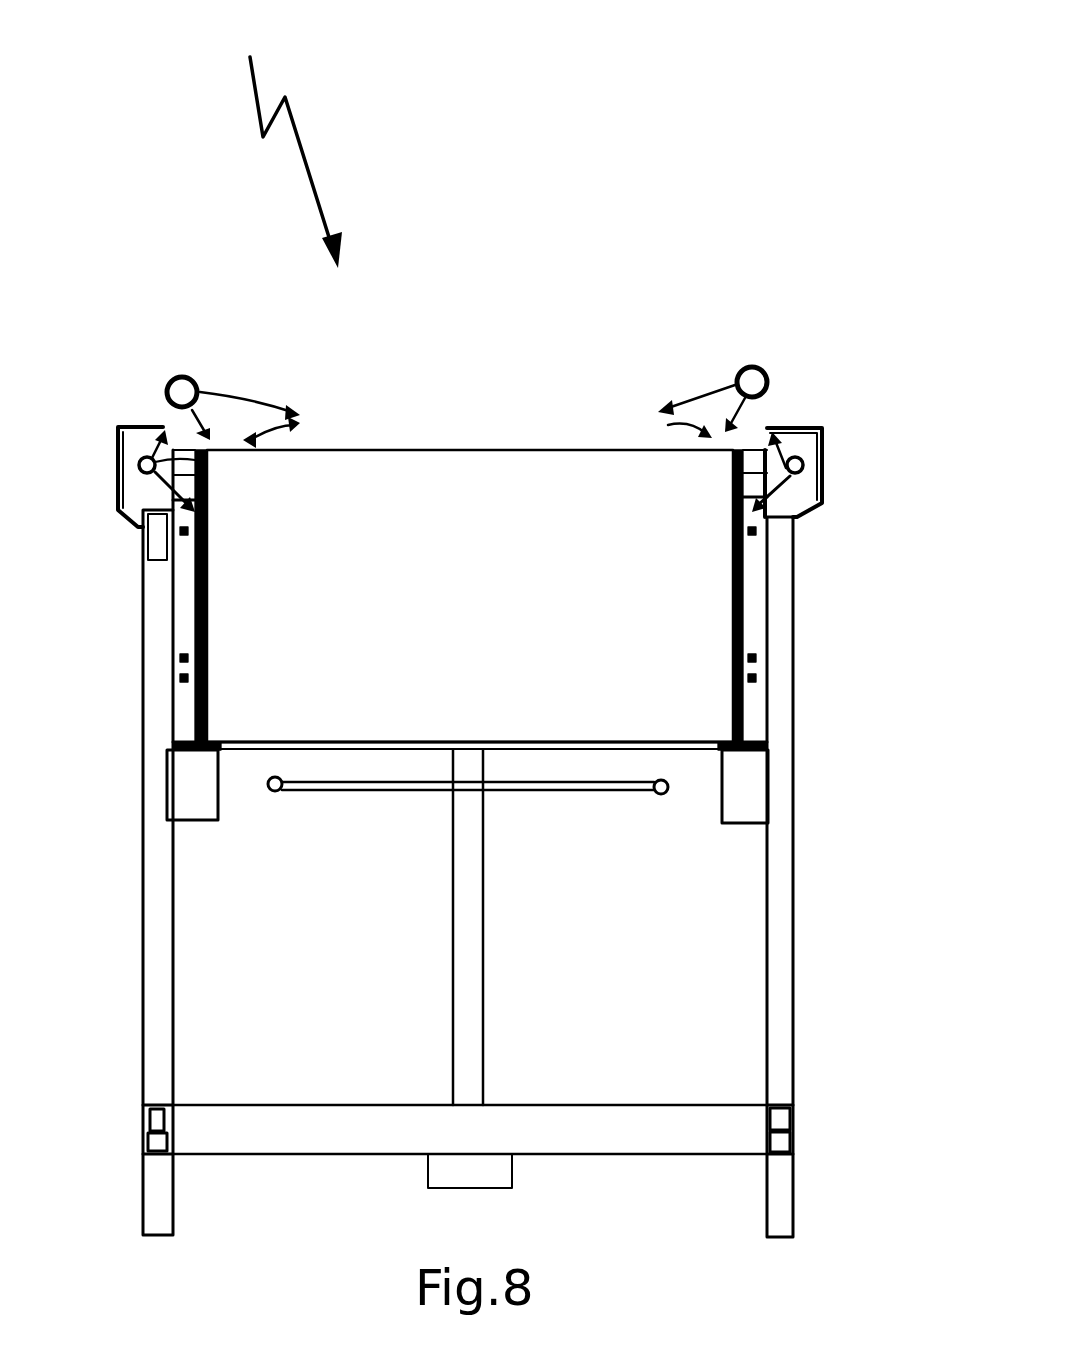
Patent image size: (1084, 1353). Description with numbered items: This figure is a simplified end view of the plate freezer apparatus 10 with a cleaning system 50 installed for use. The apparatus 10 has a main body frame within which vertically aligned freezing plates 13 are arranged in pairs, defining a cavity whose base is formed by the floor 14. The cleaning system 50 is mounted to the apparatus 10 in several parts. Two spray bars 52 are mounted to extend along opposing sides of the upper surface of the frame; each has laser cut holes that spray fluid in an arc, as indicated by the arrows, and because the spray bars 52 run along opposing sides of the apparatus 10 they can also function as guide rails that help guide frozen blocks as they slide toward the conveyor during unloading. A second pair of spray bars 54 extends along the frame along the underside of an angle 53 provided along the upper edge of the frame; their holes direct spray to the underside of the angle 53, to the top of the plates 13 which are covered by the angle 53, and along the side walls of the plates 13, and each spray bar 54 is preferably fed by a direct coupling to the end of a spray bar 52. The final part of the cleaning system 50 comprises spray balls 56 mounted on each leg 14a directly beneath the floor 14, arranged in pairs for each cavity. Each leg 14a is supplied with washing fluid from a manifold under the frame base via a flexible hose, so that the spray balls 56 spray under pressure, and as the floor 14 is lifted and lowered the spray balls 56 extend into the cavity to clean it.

The plate freezer apparatus 10 is at (830, 646).
The freezing plate 13 is at (480, 590).
The floor 14 is at (553, 740).
The leg 14a is at (463, 988).
The cleaning system 50 is at (262, 135).
The spray bar 52 is at (170, 378).
The angle 53 is at (120, 428).
The spray bar 54 is at (140, 470).
The spray ball 56 is at (275, 810).